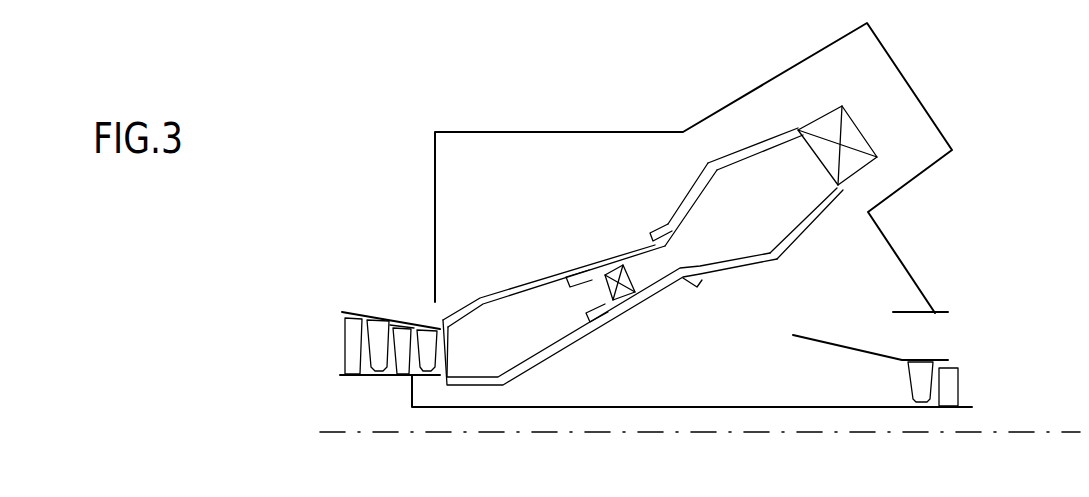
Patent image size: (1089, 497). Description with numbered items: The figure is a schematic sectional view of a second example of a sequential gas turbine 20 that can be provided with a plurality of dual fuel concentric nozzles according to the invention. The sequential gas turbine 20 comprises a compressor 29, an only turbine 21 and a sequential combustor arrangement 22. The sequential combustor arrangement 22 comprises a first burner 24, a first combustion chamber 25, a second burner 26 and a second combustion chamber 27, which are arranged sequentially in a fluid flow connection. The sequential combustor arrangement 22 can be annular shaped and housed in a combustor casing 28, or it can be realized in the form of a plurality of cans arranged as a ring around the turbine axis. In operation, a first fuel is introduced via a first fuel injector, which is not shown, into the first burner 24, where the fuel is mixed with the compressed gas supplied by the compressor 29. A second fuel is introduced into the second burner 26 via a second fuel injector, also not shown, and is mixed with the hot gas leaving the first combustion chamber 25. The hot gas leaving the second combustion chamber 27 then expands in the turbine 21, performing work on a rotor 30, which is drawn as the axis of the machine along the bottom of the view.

The sequential gas turbine 20 is at (544, 74).
The turbine 21 is at (380, 282).
The sequential combustor arrangement 22 is at (646, 157).
The first burner 24 is at (853, 138).
The first combustion chamber 25 is at (760, 219).
The second burner 26 is at (613, 274).
The second combustion chamber 27 is at (525, 345).
The combustor casing 28 is at (498, 131).
The compressor 29 is at (967, 342).
The rotor 30 is at (1018, 423).